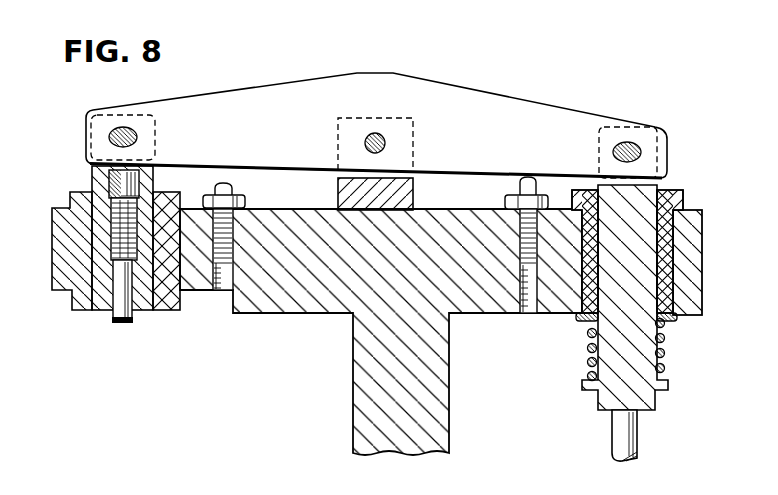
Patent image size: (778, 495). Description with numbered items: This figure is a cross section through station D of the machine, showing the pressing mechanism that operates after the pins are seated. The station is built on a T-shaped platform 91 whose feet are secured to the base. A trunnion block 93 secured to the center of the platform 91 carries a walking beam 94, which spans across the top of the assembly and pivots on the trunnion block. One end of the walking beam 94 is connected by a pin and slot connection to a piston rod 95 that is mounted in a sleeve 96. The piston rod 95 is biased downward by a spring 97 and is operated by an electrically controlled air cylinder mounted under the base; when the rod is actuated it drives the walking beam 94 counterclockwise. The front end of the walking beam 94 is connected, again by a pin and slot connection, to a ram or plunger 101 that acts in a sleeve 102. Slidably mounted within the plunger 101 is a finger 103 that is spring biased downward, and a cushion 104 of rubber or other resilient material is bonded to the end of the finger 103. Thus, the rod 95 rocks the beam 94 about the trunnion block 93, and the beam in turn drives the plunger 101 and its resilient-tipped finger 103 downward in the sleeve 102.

The platform 91 is at (355, 372).
The trunnion block 93 is at (405, 195).
The walking beam 94 is at (478, 100).
The piston rod 95 is at (613, 420).
The sleeve 96 is at (672, 193).
The spring 97 is at (663, 348).
The plunger 101 is at (100, 178).
The sleeve 102 is at (70, 197).
The finger 103 is at (115, 305).
The cushion 104 is at (130, 323).